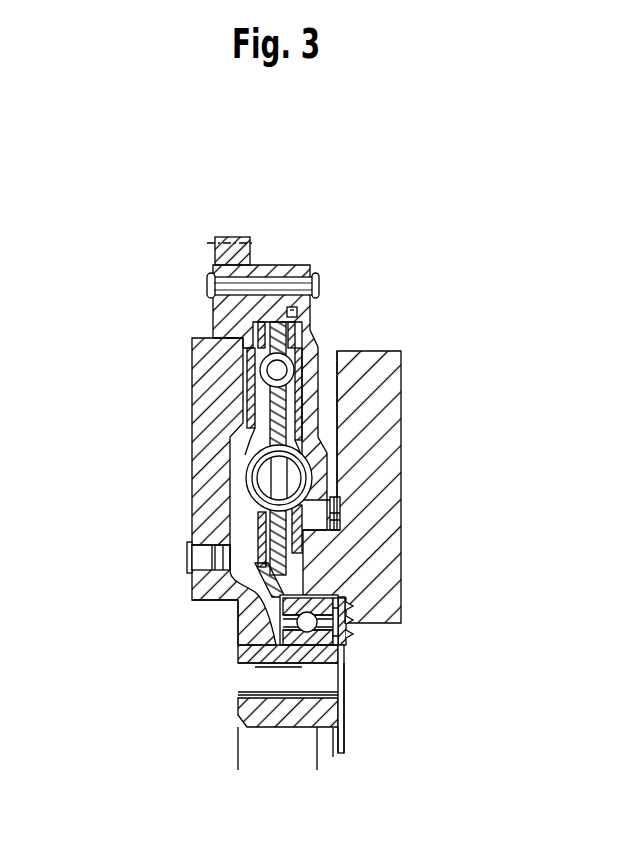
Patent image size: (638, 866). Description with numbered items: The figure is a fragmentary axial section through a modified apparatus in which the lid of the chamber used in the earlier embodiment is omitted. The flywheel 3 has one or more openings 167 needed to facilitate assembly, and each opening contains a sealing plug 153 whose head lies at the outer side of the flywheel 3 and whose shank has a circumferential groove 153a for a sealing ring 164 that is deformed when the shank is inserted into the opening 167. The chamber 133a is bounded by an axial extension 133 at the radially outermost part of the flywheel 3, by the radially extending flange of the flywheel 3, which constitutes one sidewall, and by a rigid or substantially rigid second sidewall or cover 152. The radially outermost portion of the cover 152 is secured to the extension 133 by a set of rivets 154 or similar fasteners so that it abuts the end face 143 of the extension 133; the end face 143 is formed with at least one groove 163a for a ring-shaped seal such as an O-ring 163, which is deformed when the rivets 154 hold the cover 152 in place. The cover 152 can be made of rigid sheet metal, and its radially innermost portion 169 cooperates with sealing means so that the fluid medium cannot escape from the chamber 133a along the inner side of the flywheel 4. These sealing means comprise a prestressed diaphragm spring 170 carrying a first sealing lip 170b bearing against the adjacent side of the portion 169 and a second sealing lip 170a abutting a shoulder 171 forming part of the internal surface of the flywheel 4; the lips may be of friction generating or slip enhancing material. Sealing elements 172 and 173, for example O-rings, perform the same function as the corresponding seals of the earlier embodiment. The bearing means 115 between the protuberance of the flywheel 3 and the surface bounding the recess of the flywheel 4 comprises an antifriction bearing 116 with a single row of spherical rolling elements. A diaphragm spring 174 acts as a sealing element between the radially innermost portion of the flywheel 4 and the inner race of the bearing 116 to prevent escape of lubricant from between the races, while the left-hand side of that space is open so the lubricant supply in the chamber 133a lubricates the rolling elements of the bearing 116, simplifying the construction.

The flywheel 3 is at (215, 402).
The flywheel 4 is at (385, 590).
The bearing means 115 is at (316, 662).
The antifriction bearing 116 is at (347, 677).
The axial extension 133 is at (258, 266).
The chamber 133a is at (243, 352).
The end face 143 is at (293, 263).
The cover 152 is at (317, 347).
The sealing plug 153 is at (205, 558).
The circumferential groove 153a is at (203, 585).
The rivets 154 is at (285, 263).
The O-ring 163 is at (300, 311).
The groove 163a is at (385, 280).
The sealing ring 164 is at (175, 667).
The openings 167 is at (207, 545).
The radially innermost portion 169 is at (367, 437).
The diaphragm spring 170 is at (340, 512).
The second sealing lip 170a is at (340, 528).
The first sealing lip 170b is at (334, 500).
The shoulder 171 is at (340, 518).
The sealing element 172 is at (296, 648).
The sealing element 173 is at (348, 623).
The diaphragm spring 174 is at (342, 630).